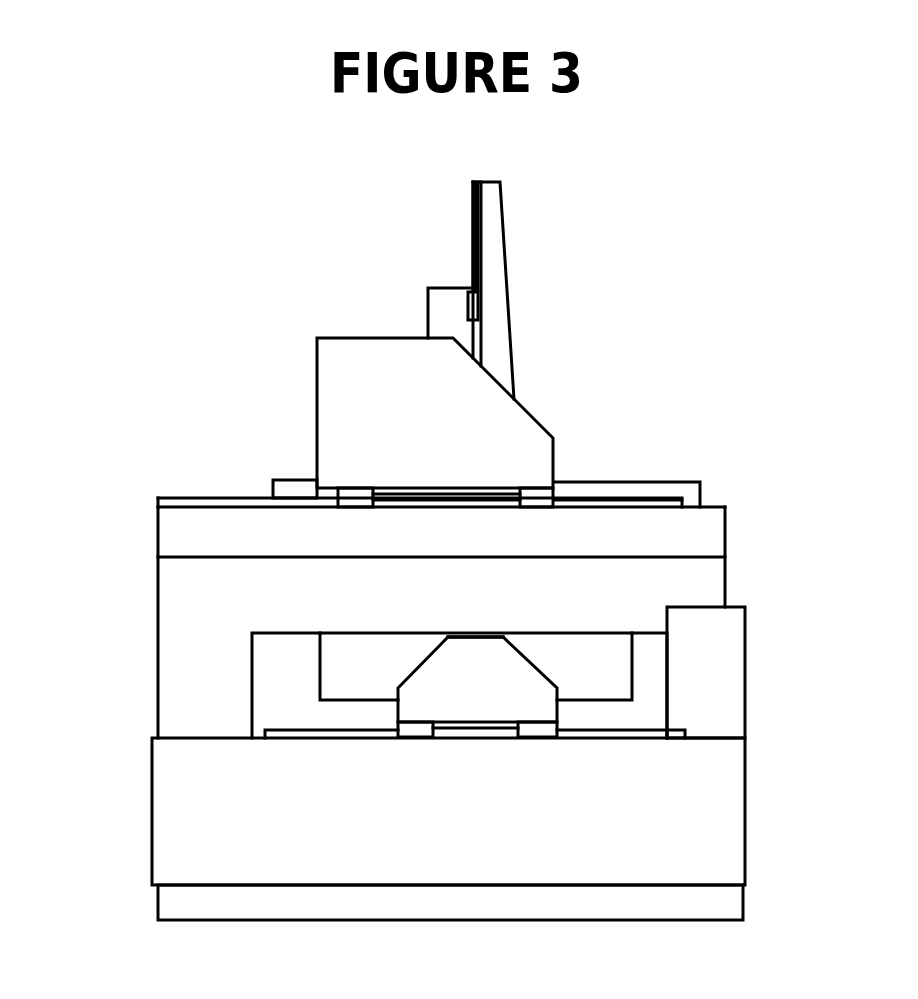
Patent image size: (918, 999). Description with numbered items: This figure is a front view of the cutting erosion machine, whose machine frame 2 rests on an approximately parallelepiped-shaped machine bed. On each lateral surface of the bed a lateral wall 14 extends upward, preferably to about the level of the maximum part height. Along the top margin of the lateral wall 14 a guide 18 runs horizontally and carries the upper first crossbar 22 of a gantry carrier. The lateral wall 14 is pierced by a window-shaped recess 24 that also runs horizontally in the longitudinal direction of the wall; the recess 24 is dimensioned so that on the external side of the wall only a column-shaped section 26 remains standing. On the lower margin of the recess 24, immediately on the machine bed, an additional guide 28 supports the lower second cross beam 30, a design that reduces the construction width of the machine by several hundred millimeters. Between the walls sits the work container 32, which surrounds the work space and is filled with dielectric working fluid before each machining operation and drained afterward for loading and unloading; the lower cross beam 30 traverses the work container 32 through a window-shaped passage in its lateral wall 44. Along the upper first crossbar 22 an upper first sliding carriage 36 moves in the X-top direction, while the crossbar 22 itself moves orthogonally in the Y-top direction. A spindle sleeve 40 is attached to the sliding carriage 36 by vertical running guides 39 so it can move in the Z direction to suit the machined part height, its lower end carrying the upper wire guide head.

The machine frame 2 is at (215, 288).
The lateral wall 14 is at (441, 622).
The guide 18 is at (197, 497).
The upper first crossbar 22 is at (435, 422).
The window-shaped recess 24 is at (283, 662).
The column-shaped section 26 is at (466, 672).
The additional guide 28 is at (293, 740).
The lower second cross beam 30 is at (477, 687).
The work container 32 is at (285, 645).
The upper first sliding carriage 36 is at (437, 297).
The vertical running guide 39 is at (472, 202).
The spindle sleeve 40 is at (493, 228).
The lateral wall of work container 44 is at (590, 660).